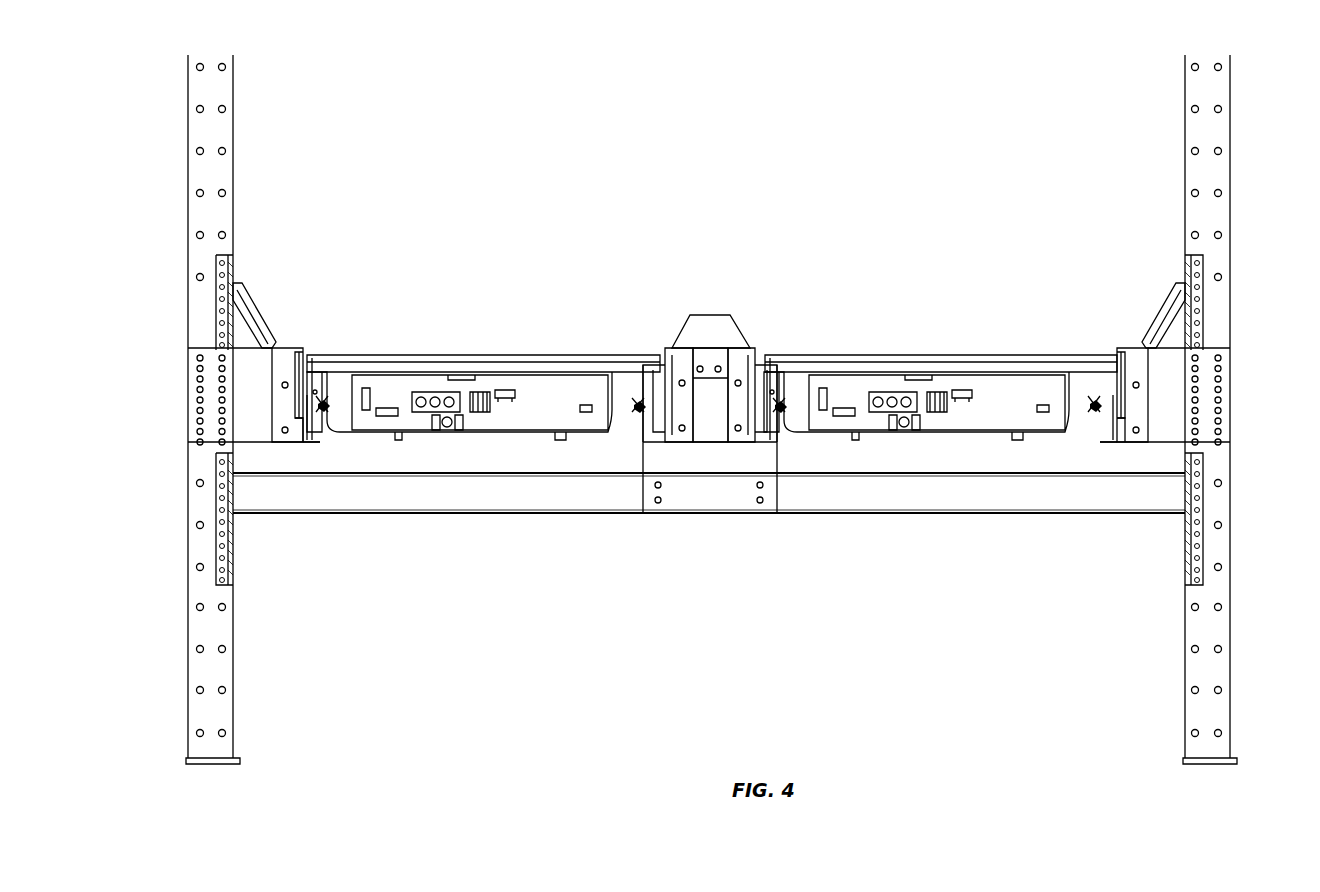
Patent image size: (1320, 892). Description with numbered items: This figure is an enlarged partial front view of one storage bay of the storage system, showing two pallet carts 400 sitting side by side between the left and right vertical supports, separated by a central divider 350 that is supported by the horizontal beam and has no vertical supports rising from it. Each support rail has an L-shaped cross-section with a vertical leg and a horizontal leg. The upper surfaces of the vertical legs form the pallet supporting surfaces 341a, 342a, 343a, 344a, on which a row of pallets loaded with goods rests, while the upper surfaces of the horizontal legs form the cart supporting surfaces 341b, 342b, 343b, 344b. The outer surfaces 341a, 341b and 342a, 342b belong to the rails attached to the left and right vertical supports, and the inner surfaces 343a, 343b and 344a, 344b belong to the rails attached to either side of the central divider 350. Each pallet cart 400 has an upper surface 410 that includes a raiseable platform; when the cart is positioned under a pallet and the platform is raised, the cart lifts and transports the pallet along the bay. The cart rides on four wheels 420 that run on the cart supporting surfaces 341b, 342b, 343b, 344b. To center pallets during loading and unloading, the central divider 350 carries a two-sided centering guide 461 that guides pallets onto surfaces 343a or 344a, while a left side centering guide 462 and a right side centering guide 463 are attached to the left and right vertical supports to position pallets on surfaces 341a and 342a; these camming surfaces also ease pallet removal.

The pallet supporting surface 341a is at (290, 350).
The cart supporting surface 341b is at (297, 410).
The pallet supporting surface 342a is at (1128, 350).
The cart supporting surface 342b is at (1122, 408).
The pallet supporting surface 343a is at (680, 347).
The cart supporting surface 343b is at (645, 418).
The pallet supporting surface 344a is at (742, 347).
The cart supporting surface 344b is at (777, 418).
The central divider 350 is at (747, 455).
The pallet cart 400 is at (688, 406).
The upper surface 410 is at (455, 352).
The wheels 420 is at (325, 406).
The two-sided centering guide 461 is at (712, 322).
The left side centering guide 462 is at (258, 312).
The right side centering guide 463 is at (1160, 312).